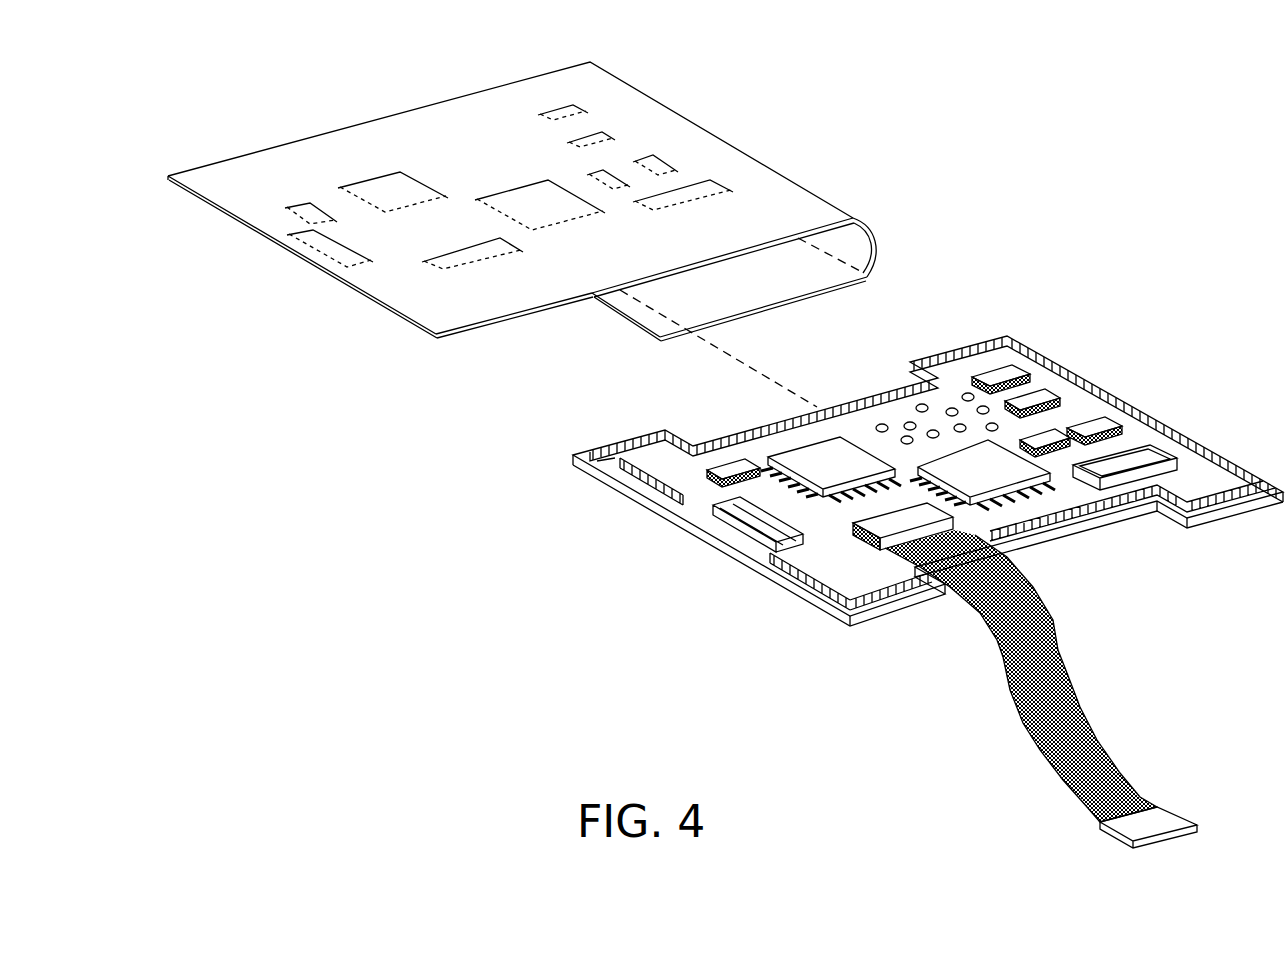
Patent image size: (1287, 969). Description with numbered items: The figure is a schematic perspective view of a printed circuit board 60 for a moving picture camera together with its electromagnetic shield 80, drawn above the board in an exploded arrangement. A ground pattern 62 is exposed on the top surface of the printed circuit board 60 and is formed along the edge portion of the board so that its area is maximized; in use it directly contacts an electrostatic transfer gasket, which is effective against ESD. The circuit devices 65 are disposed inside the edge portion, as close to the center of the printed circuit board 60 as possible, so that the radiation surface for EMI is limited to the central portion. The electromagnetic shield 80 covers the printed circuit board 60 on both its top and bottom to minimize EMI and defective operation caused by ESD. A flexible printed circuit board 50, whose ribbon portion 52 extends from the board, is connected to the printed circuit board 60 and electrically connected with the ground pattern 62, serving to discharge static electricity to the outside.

The electromagnetic shield 80 is at (352, 126).
The printed circuit board 60 is at (655, 518).
The ground pattern 62 is at (788, 587).
The circuit devices 65 is at (1042, 466).
The flexible cable 52 is at (1028, 742).
The flexible printed circuit board 50 is at (1131, 778).